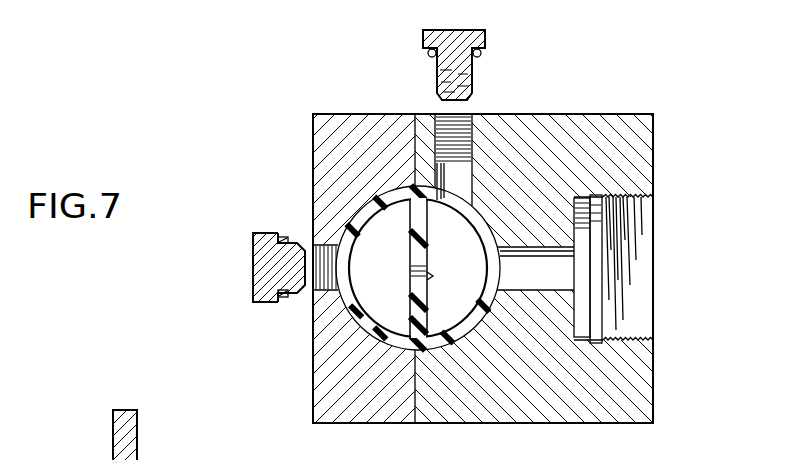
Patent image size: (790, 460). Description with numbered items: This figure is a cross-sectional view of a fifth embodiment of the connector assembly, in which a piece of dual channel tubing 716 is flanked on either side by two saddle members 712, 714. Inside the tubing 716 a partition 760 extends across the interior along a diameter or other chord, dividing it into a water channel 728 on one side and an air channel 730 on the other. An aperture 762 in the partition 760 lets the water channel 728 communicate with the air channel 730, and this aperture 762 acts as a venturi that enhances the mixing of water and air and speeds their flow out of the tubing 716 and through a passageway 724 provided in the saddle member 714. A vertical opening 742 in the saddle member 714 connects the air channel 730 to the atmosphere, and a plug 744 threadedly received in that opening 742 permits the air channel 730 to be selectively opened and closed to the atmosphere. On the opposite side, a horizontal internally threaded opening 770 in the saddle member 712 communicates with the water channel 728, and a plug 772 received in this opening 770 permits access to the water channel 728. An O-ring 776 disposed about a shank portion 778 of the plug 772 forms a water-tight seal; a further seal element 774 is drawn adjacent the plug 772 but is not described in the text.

The saddle member 712 is at (339, 113).
The saddle member 714 is at (655, 138).
The dual channel tubing 716 is at (463, 335).
The passageway 724 is at (613, 274).
The water channel 728 is at (377, 313).
The air channel 730 is at (472, 262).
The vertical opening 742 is at (470, 173).
The plug 744 is at (478, 30).
The partition 760 is at (410, 227).
The aperture 762 is at (429, 276).
The horizontal internally threaded opening 770 is at (312, 253).
The plug 772 is at (262, 261).
The lower seal 774 is at (303, 296).
The O-ring 776 is at (279, 236).
The shank portion 778 is at (278, 271).